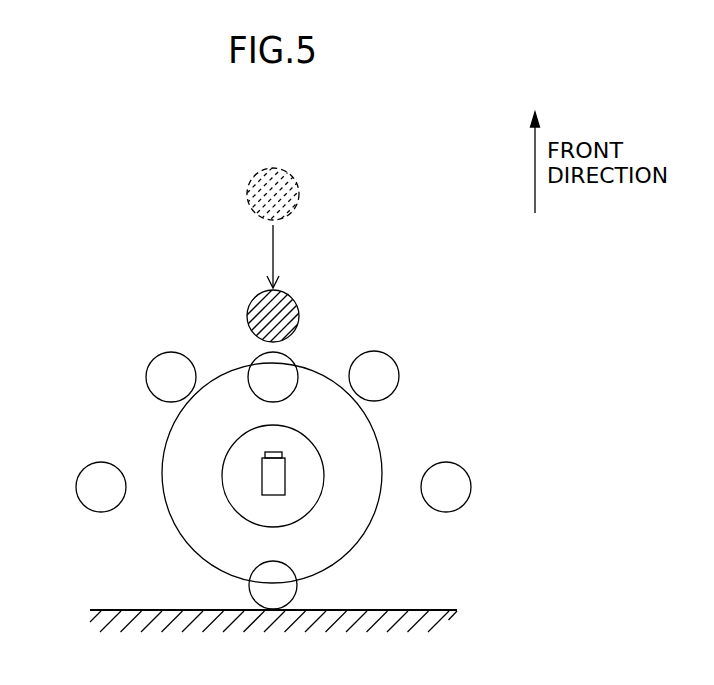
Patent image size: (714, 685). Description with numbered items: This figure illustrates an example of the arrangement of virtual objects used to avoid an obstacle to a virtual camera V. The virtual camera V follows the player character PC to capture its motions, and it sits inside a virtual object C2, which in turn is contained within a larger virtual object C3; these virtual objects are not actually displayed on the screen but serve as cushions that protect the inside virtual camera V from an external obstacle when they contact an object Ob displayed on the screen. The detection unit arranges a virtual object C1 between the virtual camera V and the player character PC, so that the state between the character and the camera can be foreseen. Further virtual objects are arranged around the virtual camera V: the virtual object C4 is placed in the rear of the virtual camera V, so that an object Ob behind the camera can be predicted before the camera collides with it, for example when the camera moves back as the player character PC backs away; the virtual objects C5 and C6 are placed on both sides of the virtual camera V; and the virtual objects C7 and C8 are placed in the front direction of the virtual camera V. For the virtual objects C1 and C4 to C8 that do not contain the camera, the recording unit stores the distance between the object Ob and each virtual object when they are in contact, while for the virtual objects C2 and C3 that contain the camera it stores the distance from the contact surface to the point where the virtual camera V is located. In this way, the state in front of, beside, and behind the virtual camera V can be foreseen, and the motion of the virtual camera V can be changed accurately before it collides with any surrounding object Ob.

The player character PC is at (293, 176).
The virtual object C1 is at (297, 362).
The virtual object C2 is at (317, 441).
The virtual object C3 is at (381, 457).
The virtual object C4 is at (297, 592).
The virtual object C5 is at (469, 471).
The virtual object C6 is at (78, 473).
The virtual object C7 is at (149, 362).
The virtual object C8 is at (397, 357).
The virtual camera V is at (285, 472).
The object Ob is at (423, 612).